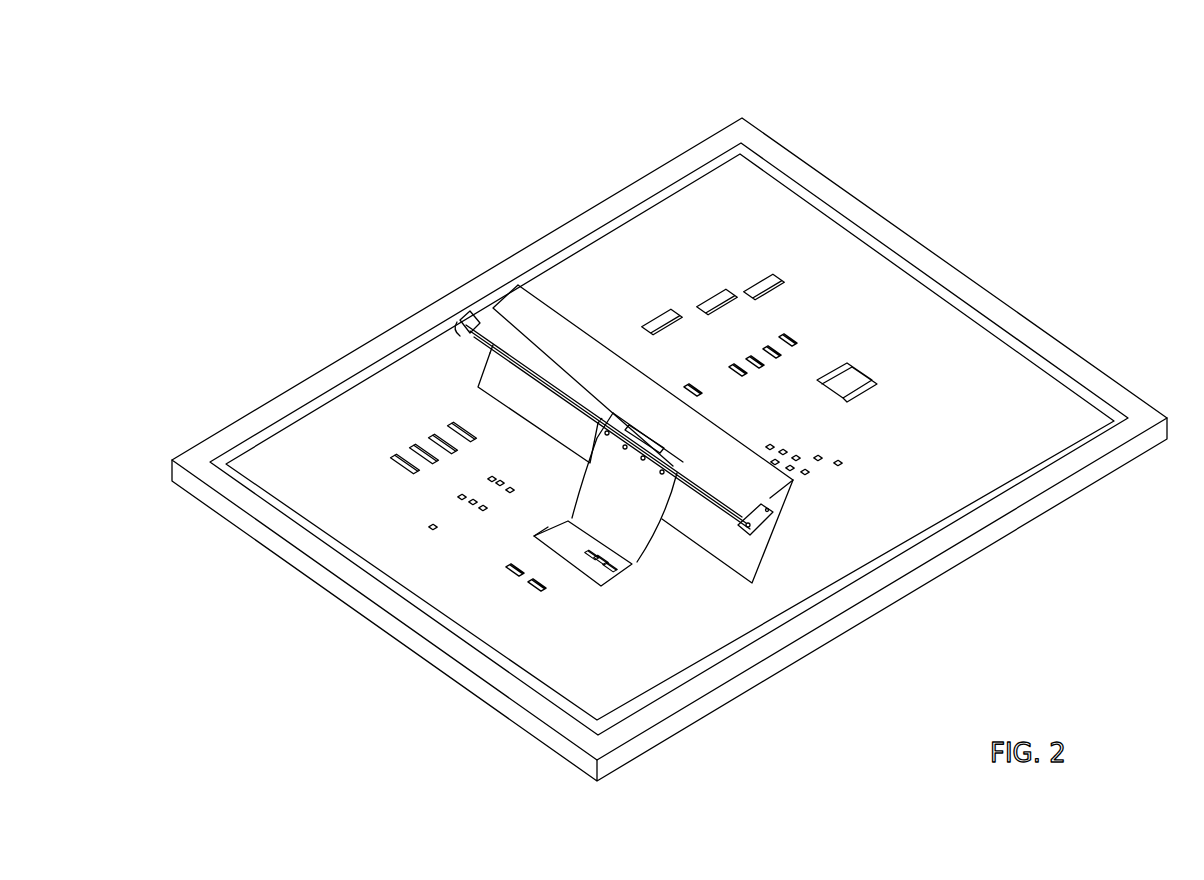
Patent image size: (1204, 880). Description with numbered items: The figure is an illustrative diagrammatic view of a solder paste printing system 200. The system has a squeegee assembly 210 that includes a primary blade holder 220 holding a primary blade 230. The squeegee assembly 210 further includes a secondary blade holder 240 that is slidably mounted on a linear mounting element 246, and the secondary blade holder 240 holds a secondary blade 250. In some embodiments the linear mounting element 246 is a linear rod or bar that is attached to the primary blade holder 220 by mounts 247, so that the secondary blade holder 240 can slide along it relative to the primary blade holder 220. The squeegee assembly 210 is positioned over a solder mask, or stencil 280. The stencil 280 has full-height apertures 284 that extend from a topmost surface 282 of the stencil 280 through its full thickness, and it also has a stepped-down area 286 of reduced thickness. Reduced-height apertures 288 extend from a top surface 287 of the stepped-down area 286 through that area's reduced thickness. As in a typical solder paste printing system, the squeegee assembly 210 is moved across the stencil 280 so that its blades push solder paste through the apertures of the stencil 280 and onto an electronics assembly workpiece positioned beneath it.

The solder paste printing system 200 is at (357, 92).
The squeegee assembly 210 is at (622, 481).
The primary blade holder 220 is at (482, 283).
The primary blade 230 is at (777, 523).
The secondary blade holder 240 is at (677, 473).
The linear mounting element 246 is at (484, 333).
The mounts 247 is at (475, 318).
The secondary blade 250 is at (638, 537).
The stencil 280 is at (1004, 416).
The topmost surface 282 is at (957, 353).
The full-height apertures 284 is at (410, 446).
The stepped-down area 286 is at (558, 542).
The top surface 287 is at (607, 578).
The reduced-height apertures 288 is at (582, 558).